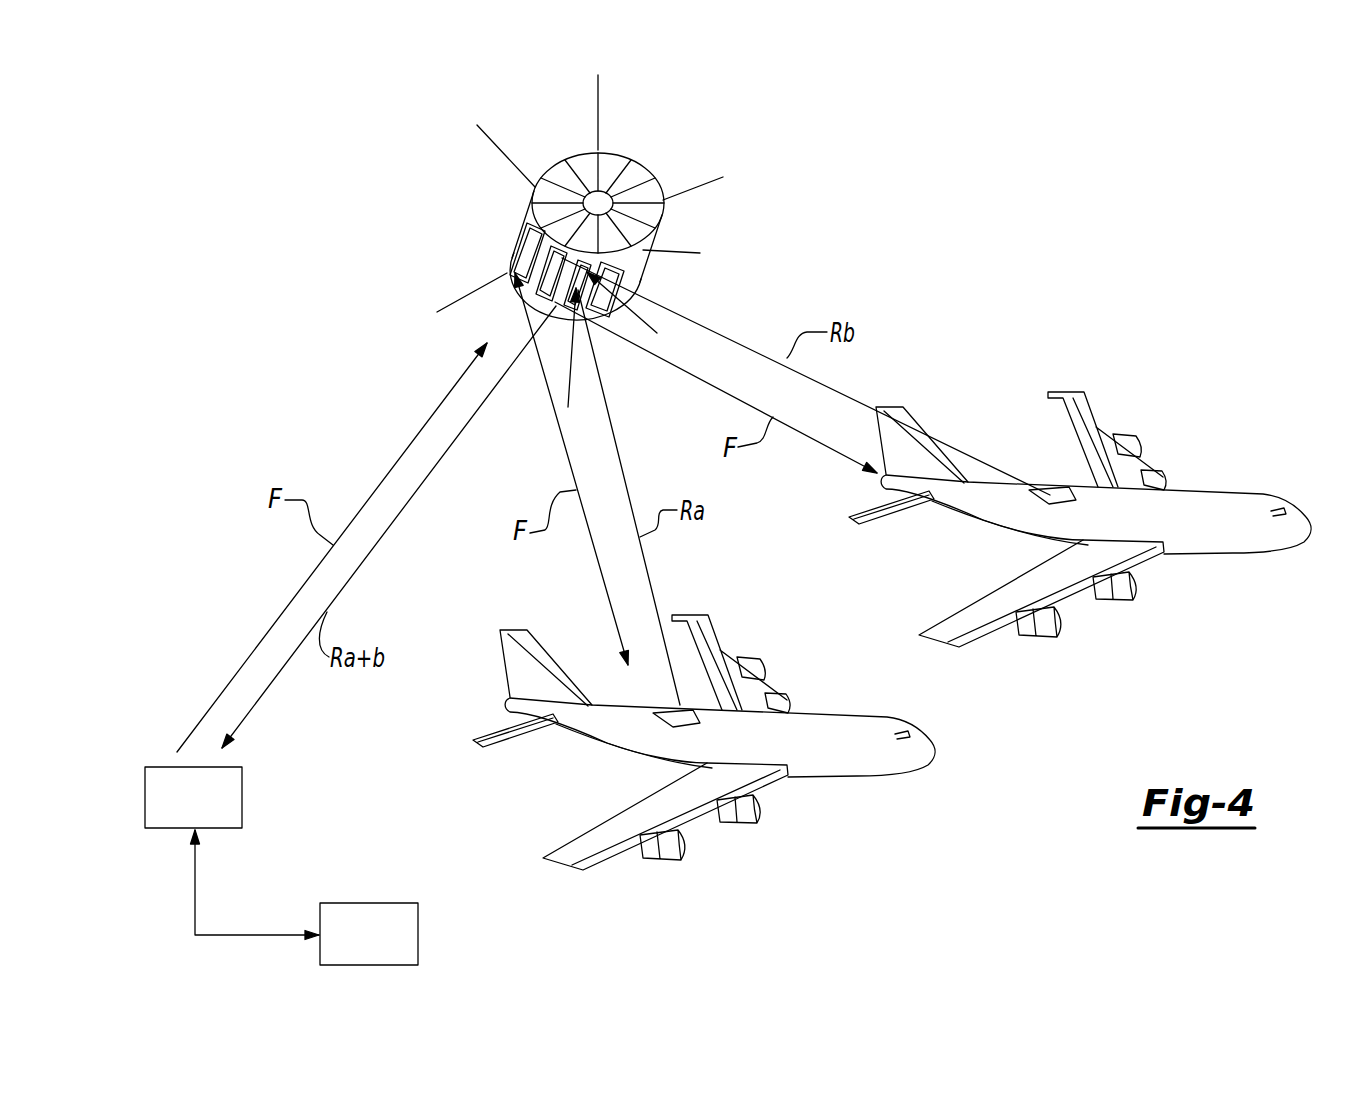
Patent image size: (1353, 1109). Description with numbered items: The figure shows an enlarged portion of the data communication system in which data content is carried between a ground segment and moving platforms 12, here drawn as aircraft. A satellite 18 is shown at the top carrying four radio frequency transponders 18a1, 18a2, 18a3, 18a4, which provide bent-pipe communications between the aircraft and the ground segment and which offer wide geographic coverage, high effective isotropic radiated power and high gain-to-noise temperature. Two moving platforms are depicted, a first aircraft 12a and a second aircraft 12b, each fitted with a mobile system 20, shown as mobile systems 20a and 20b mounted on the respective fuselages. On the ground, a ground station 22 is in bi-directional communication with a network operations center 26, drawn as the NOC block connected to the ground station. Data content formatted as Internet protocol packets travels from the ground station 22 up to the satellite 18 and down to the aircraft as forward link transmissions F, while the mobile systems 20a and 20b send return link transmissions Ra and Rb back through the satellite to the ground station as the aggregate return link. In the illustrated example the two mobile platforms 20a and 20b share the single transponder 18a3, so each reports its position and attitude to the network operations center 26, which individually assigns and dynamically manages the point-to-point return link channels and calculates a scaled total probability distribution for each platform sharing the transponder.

The moving platform 12 is at (739, 736).
The first moving platform 12a is at (711, 726).
The second moving platform 12b is at (1083, 519).
The satellite 18 is at (553, 200).
The first transponder 18a1 is at (527, 258).
The second transponder 18a2 is at (547, 277).
The third transponder 18a3 is at (600, 273).
The fourth transponder 18a4 is at (640, 325).
The mobile system 20 is at (666, 688).
The first mobile platform system 20a is at (683, 712).
The second mobile platform system 20b is at (1053, 483).
The ground station 22 is at (145, 793).
The network operations center 26 is at (388, 903).